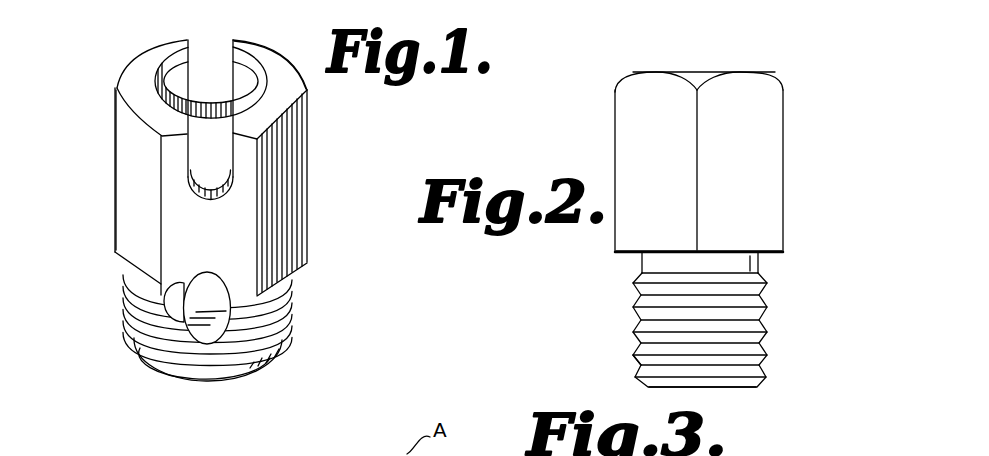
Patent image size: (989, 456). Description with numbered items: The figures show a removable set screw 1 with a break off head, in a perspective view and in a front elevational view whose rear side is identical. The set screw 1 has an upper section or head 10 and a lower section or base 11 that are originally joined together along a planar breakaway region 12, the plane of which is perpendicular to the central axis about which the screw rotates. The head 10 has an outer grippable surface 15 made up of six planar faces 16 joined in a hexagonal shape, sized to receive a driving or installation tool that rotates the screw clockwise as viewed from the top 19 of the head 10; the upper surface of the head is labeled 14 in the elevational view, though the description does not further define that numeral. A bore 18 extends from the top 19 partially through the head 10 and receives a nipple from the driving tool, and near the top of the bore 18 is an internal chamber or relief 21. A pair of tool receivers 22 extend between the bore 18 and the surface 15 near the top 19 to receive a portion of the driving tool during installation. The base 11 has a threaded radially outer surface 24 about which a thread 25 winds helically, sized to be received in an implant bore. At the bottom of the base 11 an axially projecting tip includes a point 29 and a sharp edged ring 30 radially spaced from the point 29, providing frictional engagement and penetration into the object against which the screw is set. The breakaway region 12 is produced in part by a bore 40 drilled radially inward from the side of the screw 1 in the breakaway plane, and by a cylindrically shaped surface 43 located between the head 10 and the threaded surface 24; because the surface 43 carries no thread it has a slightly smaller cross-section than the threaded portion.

In FIG. 1, the set screw 1 is at (86, 157).
In FIG. 2, the set screw 1 is at (803, 159).
In FIG. 1, the head 10 is at (308, 207).
In FIG. 2, the head 10 is at (783, 118).
In FIG. 1, the base 11 is at (120, 325).
In FIG. 2, the base 11 is at (763, 333).
In FIG. 2, the breakaway region 12 is at (642, 263).
In FIG. 2, the top surface of head 14 is at (765, 72).
In FIG. 1, the outer grippable surface 15 is at (122, 113).
In FIG. 2, the outer grippable surface 15 is at (625, 236).
In FIG. 1, the planar faces 16 is at (300, 162).
In FIG. 2, the planar faces 16 is at (668, 118).
In FIG. 1, the bore 18 is at (206, 162).
In FIG. 1, the top 19 is at (263, 57).
In FIG. 1, the relief 21 is at (175, 65).
In FIG. 1, the tool receivers 22 is at (231, 52).
In FIG. 1, the radially outer surface 24 is at (290, 346).
In FIG. 2, the thread 25 is at (630, 357).
In FIG. 2, the point 29 is at (697, 387).
In FIG. 1, the sharp edged ring 30 is at (230, 370).
In FIG. 1, the bore 40 is at (183, 286).
In FIG. 2, the cylindrically shaped surface 43 is at (760, 263).